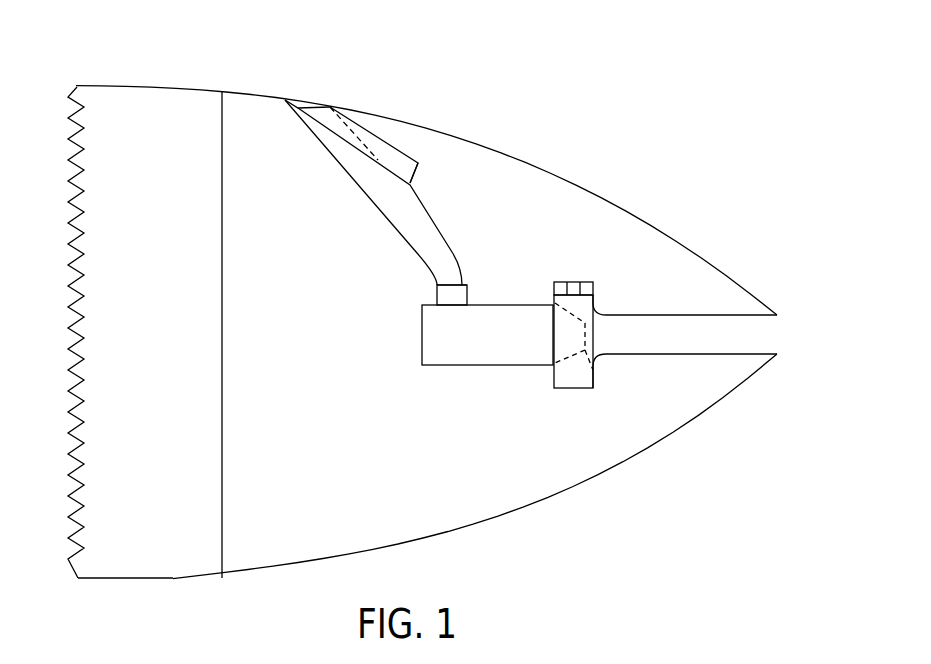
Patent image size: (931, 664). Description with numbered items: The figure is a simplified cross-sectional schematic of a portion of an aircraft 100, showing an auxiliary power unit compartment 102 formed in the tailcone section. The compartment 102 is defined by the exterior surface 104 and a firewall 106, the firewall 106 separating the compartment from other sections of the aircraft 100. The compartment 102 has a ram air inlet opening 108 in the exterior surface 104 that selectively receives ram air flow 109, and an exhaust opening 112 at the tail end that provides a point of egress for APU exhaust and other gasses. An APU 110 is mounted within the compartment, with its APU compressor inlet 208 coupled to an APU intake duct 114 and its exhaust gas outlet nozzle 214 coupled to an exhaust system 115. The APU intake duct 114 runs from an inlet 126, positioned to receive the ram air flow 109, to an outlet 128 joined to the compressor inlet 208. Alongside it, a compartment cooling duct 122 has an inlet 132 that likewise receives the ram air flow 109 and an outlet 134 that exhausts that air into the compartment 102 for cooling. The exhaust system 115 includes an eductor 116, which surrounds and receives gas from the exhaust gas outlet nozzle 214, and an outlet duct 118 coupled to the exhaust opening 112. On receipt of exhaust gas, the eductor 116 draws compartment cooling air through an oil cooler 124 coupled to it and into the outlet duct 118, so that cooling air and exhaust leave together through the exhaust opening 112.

The aircraft 100 is at (702, 150).
The auxiliary power unit (APU) compartment 102 is at (313, 350).
The exterior surface 104 is at (510, 153).
The firewall 106 is at (222, 474).
The ram air inlet opening 108 is at (310, 98).
The ram air flow 109 is at (175, 57).
The auxiliary power unit (APU) 110 is at (502, 347).
The exhaust opening 112 is at (777, 335).
The APU intake duct 114 is at (370, 201).
The exhaust system 115 is at (668, 304).
The eductor 116 is at (567, 389).
The outlet duct 118 is at (698, 355).
The compartment cooling duct 122 is at (402, 153).
The oil cooler 124 is at (554, 285).
The inlet 126 is at (330, 106).
The outlet 128 is at (464, 285).
The inlet 132 is at (295, 109).
The outlet 134 is at (416, 176).
The APU compressor inlet 208 is at (437, 294).
The exhaust gas outlet nozzle 214 is at (593, 368).